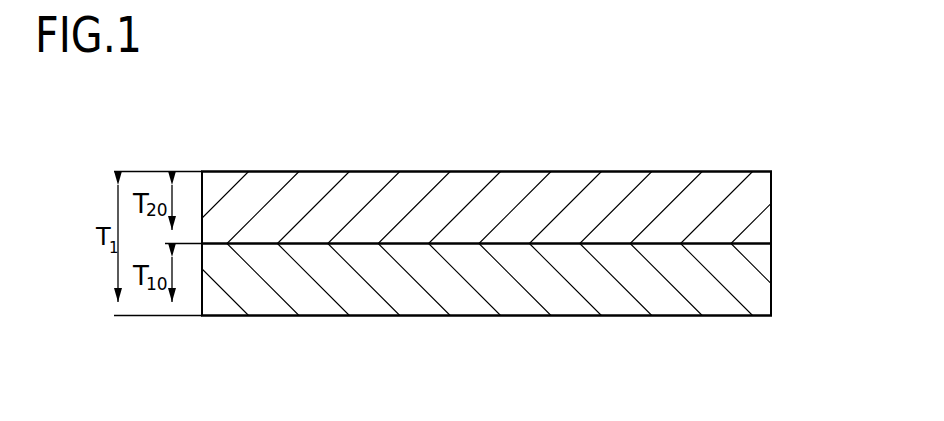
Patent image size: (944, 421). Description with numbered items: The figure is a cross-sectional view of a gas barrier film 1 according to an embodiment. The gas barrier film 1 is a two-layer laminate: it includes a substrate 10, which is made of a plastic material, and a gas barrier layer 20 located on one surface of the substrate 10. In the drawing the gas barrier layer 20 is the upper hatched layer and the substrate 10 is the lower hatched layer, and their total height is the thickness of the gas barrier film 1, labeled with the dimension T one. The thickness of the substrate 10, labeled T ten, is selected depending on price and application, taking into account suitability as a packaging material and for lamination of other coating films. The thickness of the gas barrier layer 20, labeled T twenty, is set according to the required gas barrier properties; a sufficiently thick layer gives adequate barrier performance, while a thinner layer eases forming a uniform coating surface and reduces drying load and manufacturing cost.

The gas barrier film 1 is at (757, 147).
The gas barrier layer 20 is at (771, 192).
The substrate 10 is at (771, 266).